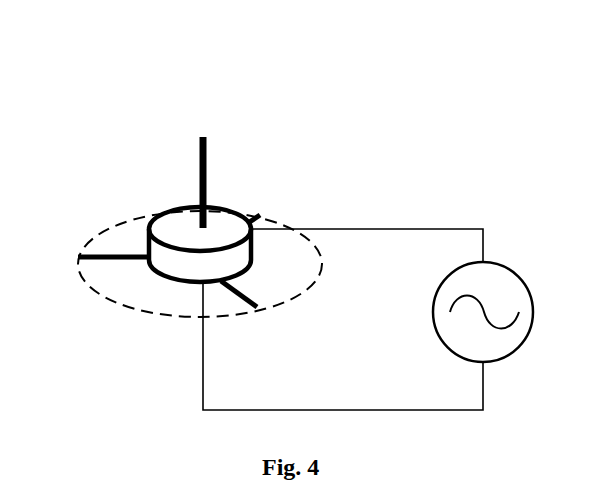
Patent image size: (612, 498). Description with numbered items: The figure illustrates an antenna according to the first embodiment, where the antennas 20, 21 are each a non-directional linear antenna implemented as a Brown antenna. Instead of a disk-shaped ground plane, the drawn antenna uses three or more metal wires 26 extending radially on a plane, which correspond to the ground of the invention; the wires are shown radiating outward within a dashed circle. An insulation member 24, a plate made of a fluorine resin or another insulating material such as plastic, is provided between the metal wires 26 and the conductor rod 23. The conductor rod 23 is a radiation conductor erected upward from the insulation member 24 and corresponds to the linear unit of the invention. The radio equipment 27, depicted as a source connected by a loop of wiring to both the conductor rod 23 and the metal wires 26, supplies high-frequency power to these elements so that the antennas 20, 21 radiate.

The antenna 20 is at (447, 50).
The antenna 21 is at (301, 212).
The conductor rod 23 is at (200, 141).
The insulation member 24 is at (177, 225).
The metal wires 26 is at (80, 256).
The radio equipment 27 is at (518, 272).